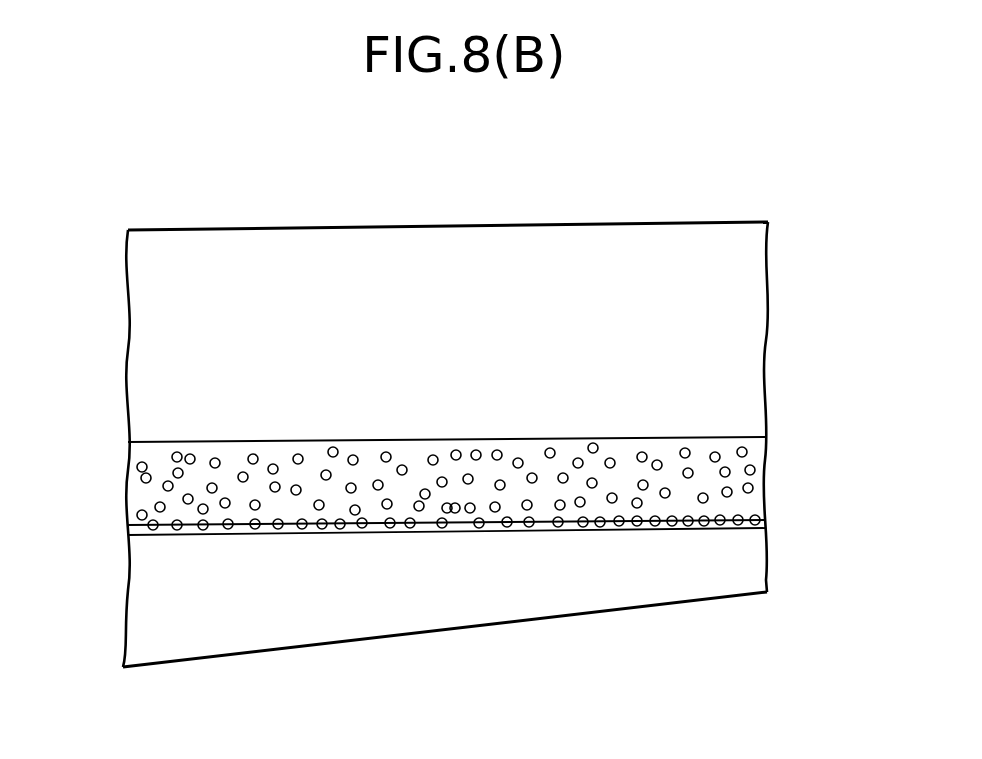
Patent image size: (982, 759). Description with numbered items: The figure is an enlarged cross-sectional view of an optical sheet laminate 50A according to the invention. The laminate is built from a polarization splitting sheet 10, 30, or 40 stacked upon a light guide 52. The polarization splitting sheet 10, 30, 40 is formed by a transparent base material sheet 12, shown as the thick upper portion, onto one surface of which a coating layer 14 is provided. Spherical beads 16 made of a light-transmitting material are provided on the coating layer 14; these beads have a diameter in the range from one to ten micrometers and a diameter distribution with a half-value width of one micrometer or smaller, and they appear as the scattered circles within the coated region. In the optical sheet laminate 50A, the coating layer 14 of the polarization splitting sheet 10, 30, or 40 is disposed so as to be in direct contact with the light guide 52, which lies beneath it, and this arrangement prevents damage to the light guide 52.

The transparent base material sheet 12 is at (302, 248).
The coating layer 14 is at (766, 515).
The spherical beads 16 is at (739, 448).
The light guide 52 is at (460, 612).
The optical sheet laminate 50A is at (630, 222).
The polarization splitting sheet 10 is at (848, 407).
The polarization splitting sheet 30 is at (848, 407).
The polarization splitting sheet 40 is at (775, 222).